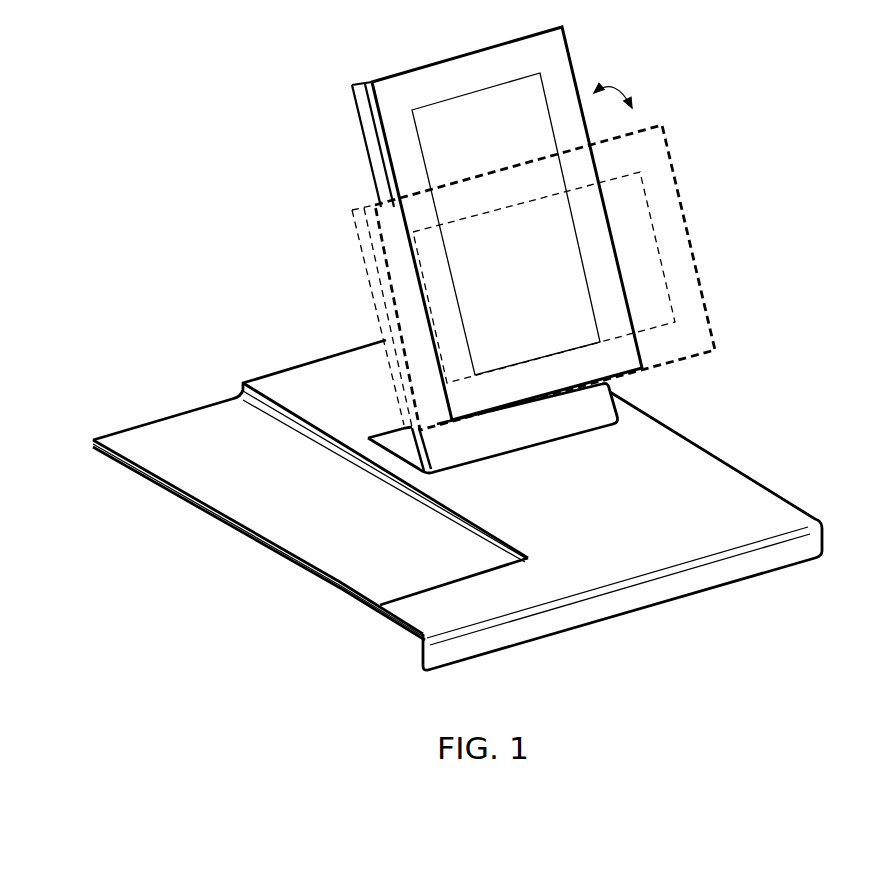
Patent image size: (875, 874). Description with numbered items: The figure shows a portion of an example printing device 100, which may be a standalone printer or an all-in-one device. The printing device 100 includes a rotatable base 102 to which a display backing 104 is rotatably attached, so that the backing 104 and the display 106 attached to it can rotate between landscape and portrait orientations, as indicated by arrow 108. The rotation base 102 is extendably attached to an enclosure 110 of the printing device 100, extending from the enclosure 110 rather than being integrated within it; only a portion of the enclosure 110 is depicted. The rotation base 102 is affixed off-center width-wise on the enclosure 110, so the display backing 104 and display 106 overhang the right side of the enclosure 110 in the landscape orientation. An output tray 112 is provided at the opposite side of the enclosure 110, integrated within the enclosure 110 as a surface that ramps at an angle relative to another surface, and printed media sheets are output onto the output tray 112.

The printing device 100 is at (190, 109).
The rotatable base 102 is at (596, 408).
The display backing 104 is at (366, 125).
The display 106 is at (368, 94).
The arrow 108 is at (634, 76).
The enclosure 110 is at (447, 645).
The output tray 112 is at (170, 433).